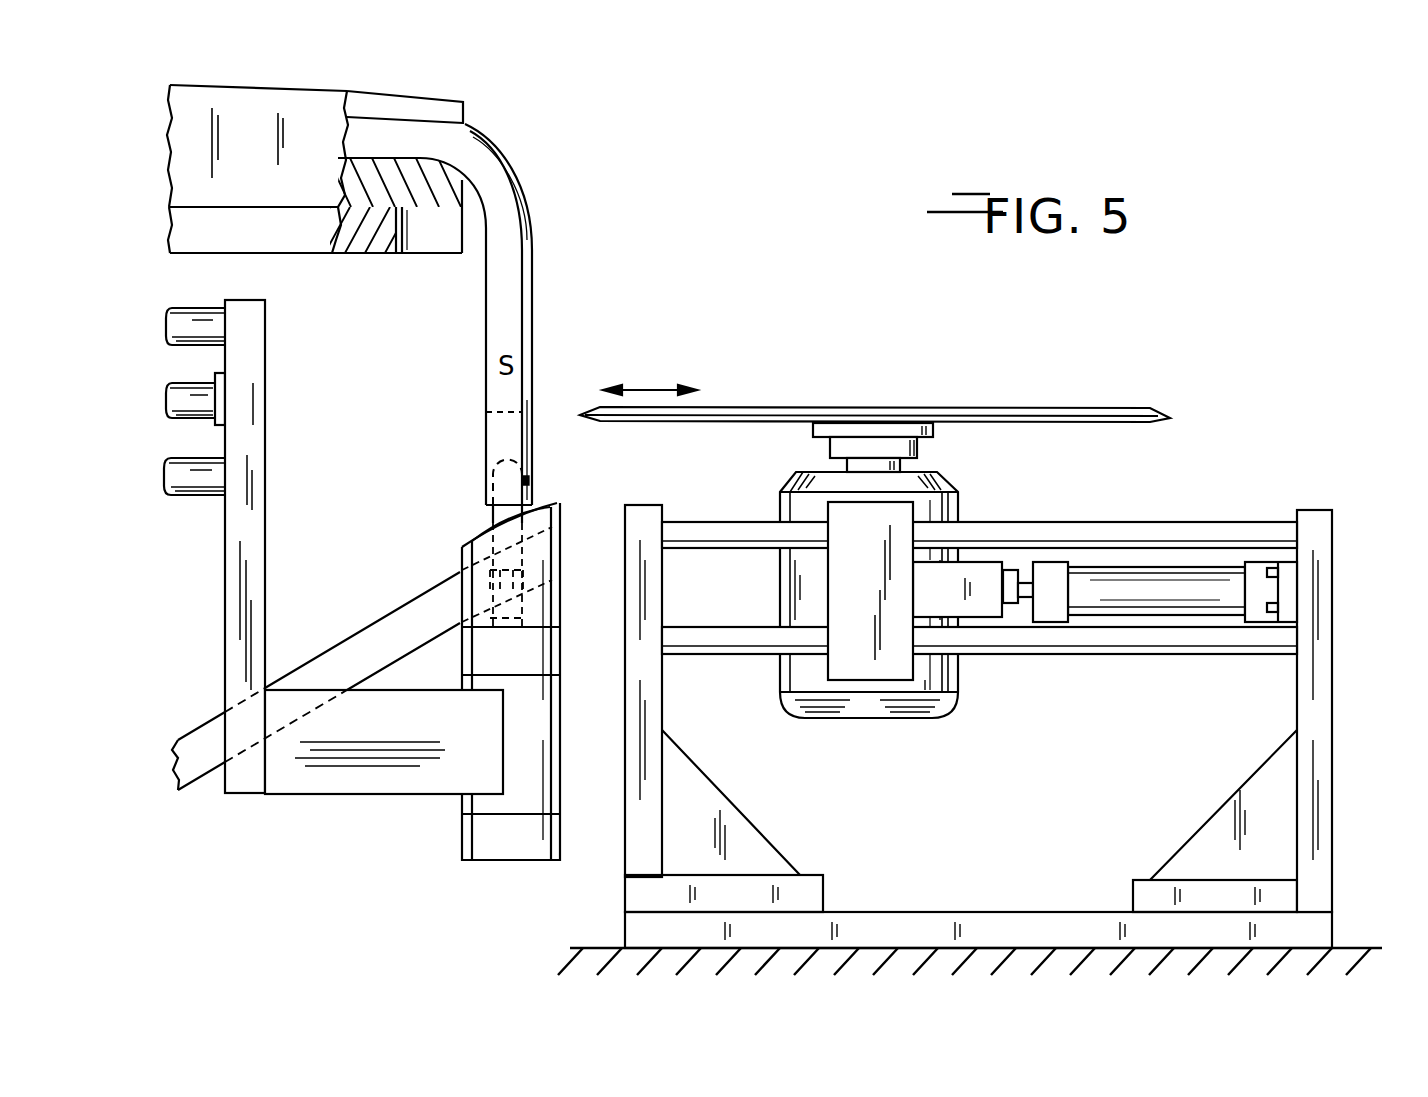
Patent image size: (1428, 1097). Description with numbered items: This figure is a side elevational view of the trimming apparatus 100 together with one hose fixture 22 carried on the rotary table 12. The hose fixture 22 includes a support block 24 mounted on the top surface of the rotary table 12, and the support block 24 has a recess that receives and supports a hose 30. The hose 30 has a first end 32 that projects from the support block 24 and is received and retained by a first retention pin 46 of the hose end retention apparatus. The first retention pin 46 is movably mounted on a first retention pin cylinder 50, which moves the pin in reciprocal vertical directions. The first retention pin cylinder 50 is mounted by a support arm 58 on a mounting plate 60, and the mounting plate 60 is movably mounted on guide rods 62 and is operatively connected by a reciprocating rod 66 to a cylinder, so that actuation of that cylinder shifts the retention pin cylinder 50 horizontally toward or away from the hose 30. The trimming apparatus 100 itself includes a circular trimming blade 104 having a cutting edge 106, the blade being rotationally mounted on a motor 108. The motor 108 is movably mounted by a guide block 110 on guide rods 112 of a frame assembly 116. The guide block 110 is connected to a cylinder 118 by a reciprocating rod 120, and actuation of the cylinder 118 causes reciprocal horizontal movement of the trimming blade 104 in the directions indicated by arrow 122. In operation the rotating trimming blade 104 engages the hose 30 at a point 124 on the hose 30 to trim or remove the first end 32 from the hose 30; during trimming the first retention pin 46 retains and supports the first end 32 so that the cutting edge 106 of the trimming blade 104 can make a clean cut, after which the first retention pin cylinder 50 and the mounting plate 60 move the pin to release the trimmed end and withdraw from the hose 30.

The rotary table 12 is at (172, 228).
The hose fixture 22 is at (192, 84).
The support block 24 is at (440, 95).
The hose 30 is at (513, 160).
The first end 32 is at (483, 507).
The first retention pin 46 is at (531, 481).
The first retention pin cylinder 50 is at (480, 833).
The support arm 58 is at (313, 793).
The mounting plate 60 is at (267, 388).
The guide rod 62 is at (171, 310).
The reciprocating rod 66 is at (168, 411).
The trimming apparatus 100 is at (1215, 350).
The circular trimming blade 104 is at (1023, 410).
The cutting edge 106 is at (583, 419).
The motor 108 is at (960, 496).
The guide block 110 is at (857, 680).
The guide rods 112 is at (1180, 525).
The frame assembly 116 is at (1333, 640).
The cylinder 118 is at (1210, 617).
The reciprocating rod 120 is at (1022, 600).
The arrow 122 is at (647, 390).
The point 124 is at (507, 412).